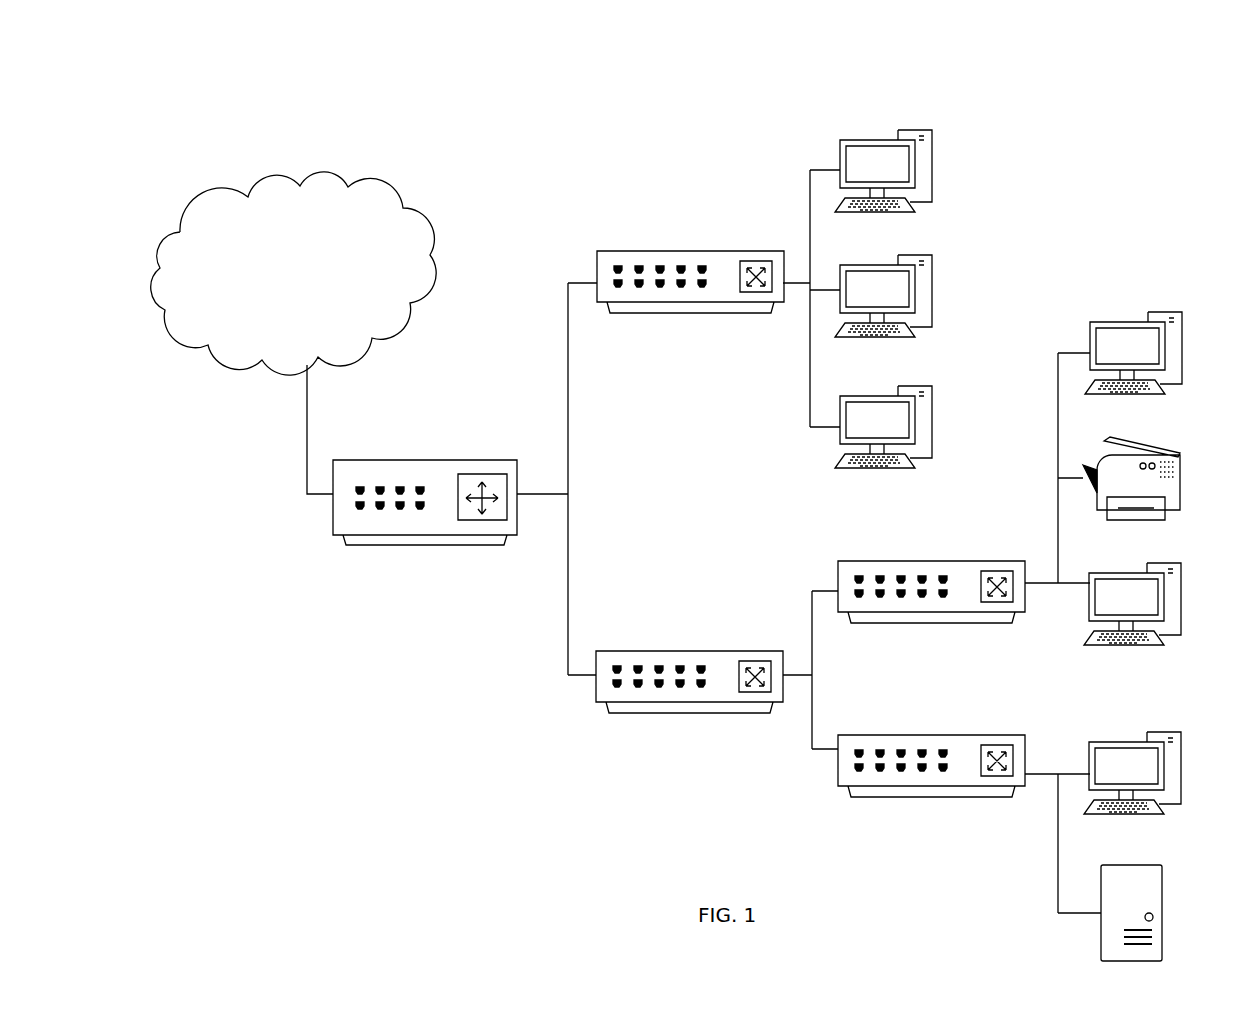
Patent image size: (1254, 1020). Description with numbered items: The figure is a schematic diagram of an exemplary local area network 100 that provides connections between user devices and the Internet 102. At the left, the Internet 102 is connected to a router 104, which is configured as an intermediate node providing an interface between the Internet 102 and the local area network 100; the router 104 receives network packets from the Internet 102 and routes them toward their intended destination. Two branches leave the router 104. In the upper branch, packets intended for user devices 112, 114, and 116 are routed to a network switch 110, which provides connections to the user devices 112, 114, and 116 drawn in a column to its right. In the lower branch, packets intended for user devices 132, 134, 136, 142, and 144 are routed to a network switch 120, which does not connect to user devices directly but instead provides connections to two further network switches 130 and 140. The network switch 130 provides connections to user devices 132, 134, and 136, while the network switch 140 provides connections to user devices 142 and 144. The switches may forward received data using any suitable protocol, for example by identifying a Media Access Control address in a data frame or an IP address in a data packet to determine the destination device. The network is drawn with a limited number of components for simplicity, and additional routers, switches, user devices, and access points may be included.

The local area network 100 is at (204, 82).
The Internet 102 is at (421, 243).
The router 104 is at (360, 548).
The network switch 110 is at (637, 244).
The user device 112 is at (937, 190).
The user device 114 is at (937, 312).
The user device 116 is at (937, 449).
The network switch 120 is at (620, 718).
The network switch 130 is at (862, 560).
The user device 132 is at (1180, 372).
The user device 134 is at (1180, 503).
The user device 136 is at (1180, 625).
The network switch 140 is at (862, 800).
The user device 142 is at (1180, 793).
The user device 144 is at (1163, 945).